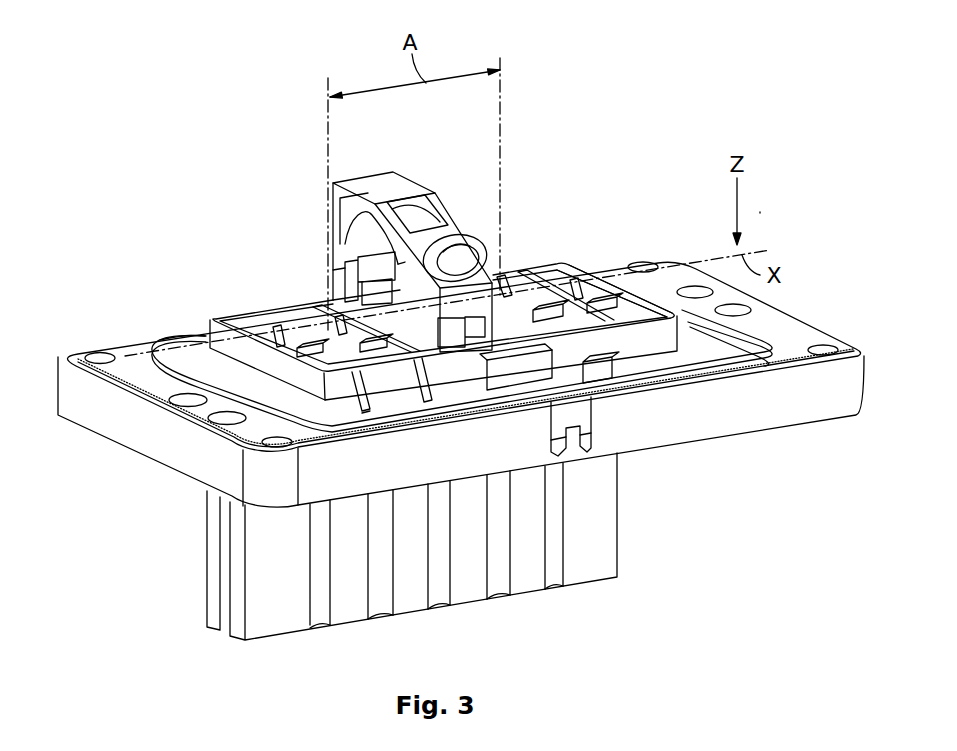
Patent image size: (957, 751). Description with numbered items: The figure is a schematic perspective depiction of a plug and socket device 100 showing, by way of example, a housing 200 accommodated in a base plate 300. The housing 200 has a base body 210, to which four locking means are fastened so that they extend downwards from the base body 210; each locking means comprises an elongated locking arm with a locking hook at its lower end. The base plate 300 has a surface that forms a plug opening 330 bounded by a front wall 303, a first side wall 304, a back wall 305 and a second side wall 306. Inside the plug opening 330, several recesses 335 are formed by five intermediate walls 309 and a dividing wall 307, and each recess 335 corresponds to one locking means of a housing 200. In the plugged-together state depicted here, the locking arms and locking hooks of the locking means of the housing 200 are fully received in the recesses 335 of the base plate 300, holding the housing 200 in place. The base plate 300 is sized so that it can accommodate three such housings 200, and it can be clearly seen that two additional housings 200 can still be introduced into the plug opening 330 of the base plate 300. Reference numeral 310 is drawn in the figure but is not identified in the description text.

The plug and socket device 100 is at (762, 209).
The housing 200 is at (386, 156).
The base body 210 is at (368, 181).
The base plate 300 is at (756, 462).
The front wall 303 is at (393, 386).
The first side wall 304 is at (240, 348).
The back wall 305 is at (313, 313).
The second side wall 306 is at (633, 307).
The dividing wall 307 is at (602, 302).
The intermediate walls 309 is at (289, 300).
The partition wall 310 is at (565, 283).
The plug opening 330 is at (568, 350).
The recesses 335 is at (567, 323).